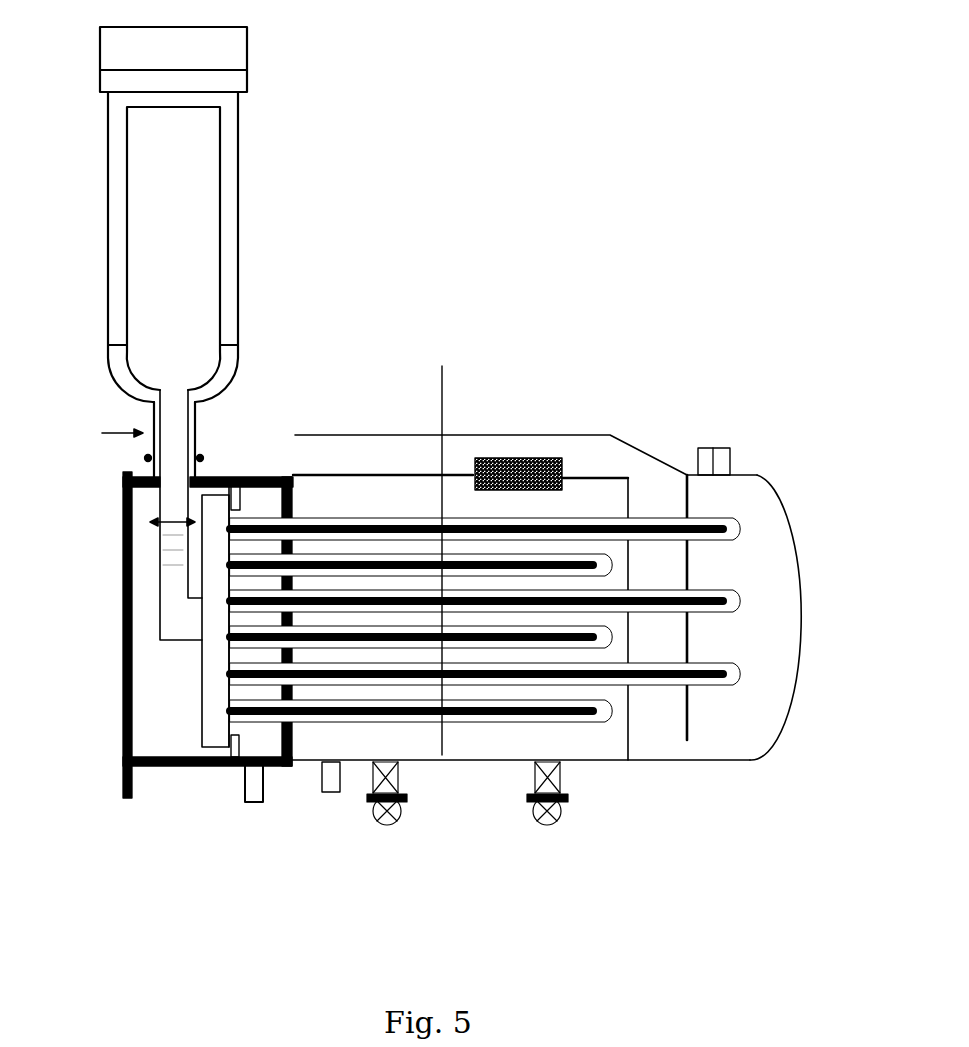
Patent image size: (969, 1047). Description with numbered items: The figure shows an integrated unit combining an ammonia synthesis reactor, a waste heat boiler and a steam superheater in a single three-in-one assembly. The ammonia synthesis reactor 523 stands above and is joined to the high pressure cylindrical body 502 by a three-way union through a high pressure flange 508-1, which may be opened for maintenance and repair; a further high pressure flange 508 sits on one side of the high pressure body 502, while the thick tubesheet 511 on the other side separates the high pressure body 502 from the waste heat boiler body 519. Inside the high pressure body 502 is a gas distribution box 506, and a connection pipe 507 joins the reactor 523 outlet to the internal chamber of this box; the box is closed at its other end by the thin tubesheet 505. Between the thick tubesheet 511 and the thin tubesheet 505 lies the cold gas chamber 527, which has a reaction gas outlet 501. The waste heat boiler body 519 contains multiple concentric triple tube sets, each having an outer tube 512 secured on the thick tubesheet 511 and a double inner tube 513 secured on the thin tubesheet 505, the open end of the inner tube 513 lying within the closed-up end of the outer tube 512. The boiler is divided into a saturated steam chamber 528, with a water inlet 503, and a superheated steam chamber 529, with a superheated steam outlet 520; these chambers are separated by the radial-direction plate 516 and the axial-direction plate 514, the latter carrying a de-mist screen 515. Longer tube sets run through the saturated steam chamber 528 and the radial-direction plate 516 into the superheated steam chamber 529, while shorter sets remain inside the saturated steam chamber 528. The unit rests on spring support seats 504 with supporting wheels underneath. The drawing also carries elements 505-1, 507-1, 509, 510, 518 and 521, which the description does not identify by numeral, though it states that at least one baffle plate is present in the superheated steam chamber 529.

The reaction gas outlet 501 is at (150, 752).
The high pressure cylindrical body 502 is at (192, 757).
The water inlet 503 is at (333, 793).
The spring support seats 504 is at (373, 780).
The thin tubesheet 505 is at (225, 700).
The cover wall 505-1 is at (308, 446).
The gas distribution box 506 is at (225, 657).
The connection pipe 507 is at (200, 612).
The piston bracket 507-1 is at (213, 623).
The high pressure flange 508 is at (158, 540).
The high pressure flange 508-1 is at (144, 458).
The neck pipe 509 is at (177, 447).
The end cover 510 is at (234, 470).
The thick tubesheet 511 is at (282, 518).
The outer tube 512 is at (390, 520).
The double inner tube 513 is at (425, 527).
The axial-direction plate 514 is at (458, 470).
The de-mist screen 515 is at (545, 468).
The radial-direction plate 516 is at (632, 762).
The baffle plate 518 is at (687, 587).
The waste heat boiler body 519 is at (673, 478).
The superheated steam outlet 520 is at (710, 447).
The temperature sensor 521 is at (434, 551).
The ammonia synthesis reactor 523 is at (192, 271).
The cold gas chamber 527 is at (277, 766).
The saturated steam chamber 528 is at (457, 745).
The superheated steam chamber 529 is at (728, 743).